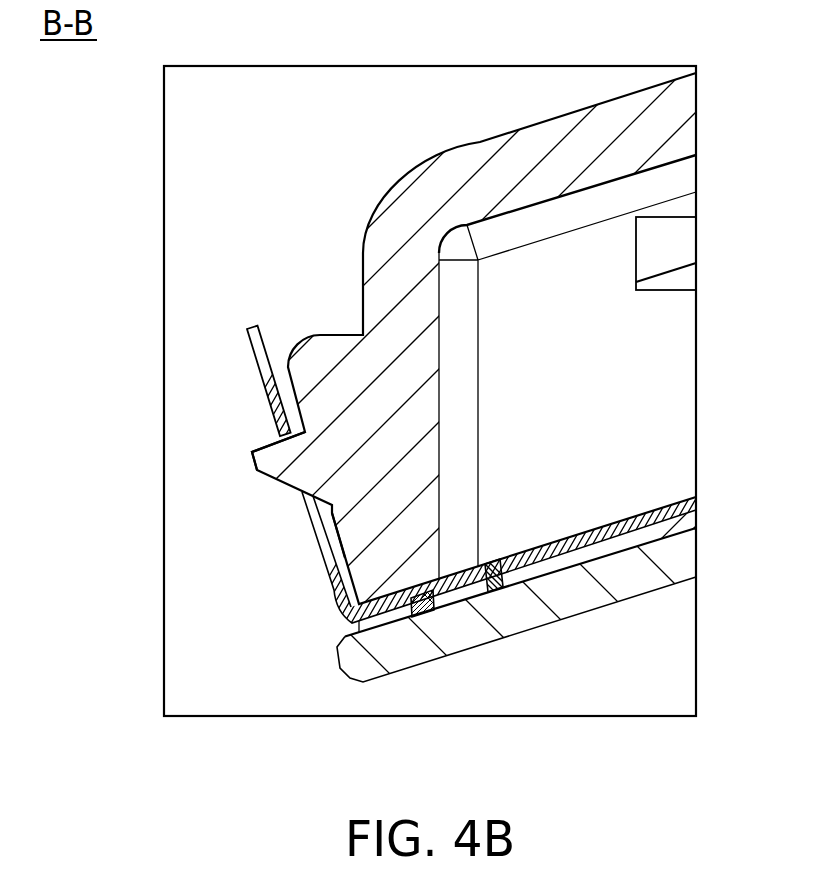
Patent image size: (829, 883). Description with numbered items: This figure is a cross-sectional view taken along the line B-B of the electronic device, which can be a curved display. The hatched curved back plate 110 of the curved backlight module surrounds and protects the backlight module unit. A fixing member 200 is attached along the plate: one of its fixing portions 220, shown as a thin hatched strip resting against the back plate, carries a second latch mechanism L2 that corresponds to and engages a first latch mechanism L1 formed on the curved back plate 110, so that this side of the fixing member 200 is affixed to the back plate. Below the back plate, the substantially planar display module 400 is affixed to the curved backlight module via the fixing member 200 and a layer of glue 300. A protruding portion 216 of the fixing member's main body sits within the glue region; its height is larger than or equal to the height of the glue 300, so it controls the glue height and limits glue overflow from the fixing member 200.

The curved back plate 110 is at (673, 124).
The fixing member 200 is at (307, 327).
The fixing portion 220 is at (267, 378).
The glue 300 is at (357, 628).
The display module 400 is at (681, 562).
The protruding portion 216 is at (425, 612).
The first latch mechanism L1 is at (280, 456).
The second latch mechanism L2 is at (322, 516).